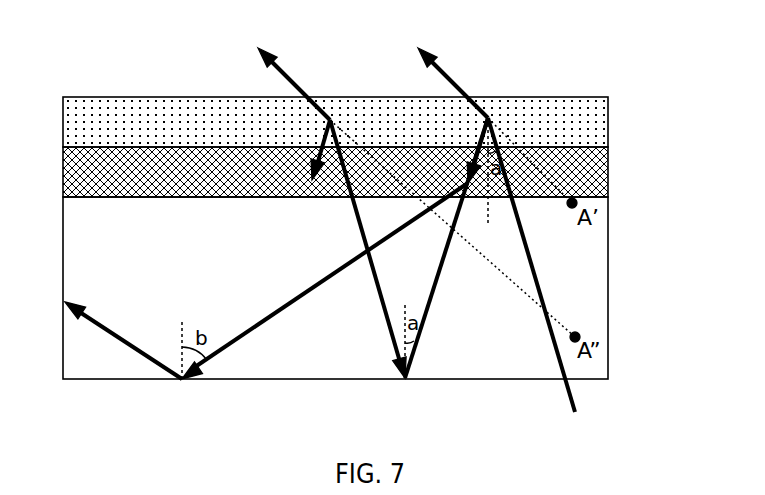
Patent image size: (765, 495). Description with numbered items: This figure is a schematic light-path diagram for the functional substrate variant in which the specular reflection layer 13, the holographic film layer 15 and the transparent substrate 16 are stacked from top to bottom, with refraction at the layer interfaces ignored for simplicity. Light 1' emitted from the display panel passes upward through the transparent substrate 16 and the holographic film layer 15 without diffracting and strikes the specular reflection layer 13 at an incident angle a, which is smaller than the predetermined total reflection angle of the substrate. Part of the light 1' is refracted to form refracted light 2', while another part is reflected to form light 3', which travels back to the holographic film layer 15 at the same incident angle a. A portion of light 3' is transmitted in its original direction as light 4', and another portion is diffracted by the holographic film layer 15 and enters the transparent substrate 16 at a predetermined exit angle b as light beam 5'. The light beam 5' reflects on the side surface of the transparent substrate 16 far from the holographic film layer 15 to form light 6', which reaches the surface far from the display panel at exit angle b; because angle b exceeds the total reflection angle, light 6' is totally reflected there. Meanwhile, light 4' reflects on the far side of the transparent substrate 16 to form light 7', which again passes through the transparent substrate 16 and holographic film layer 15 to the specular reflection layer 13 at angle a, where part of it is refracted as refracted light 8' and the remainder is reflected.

The specular reflection layer 13 is at (612, 121).
The holographic film layer 15 is at (612, 168).
The transparent substrate 16 is at (604, 263).
The light 1' is at (531, 265).
The refracted light 2' is at (453, 83).
The light 3' is at (456, 150).
The light 4' is at (446, 248).
The light beam 5' is at (325, 281).
The light 6' is at (123, 339).
The light 7' is at (368, 249).
The refracted light 8' is at (294, 84).